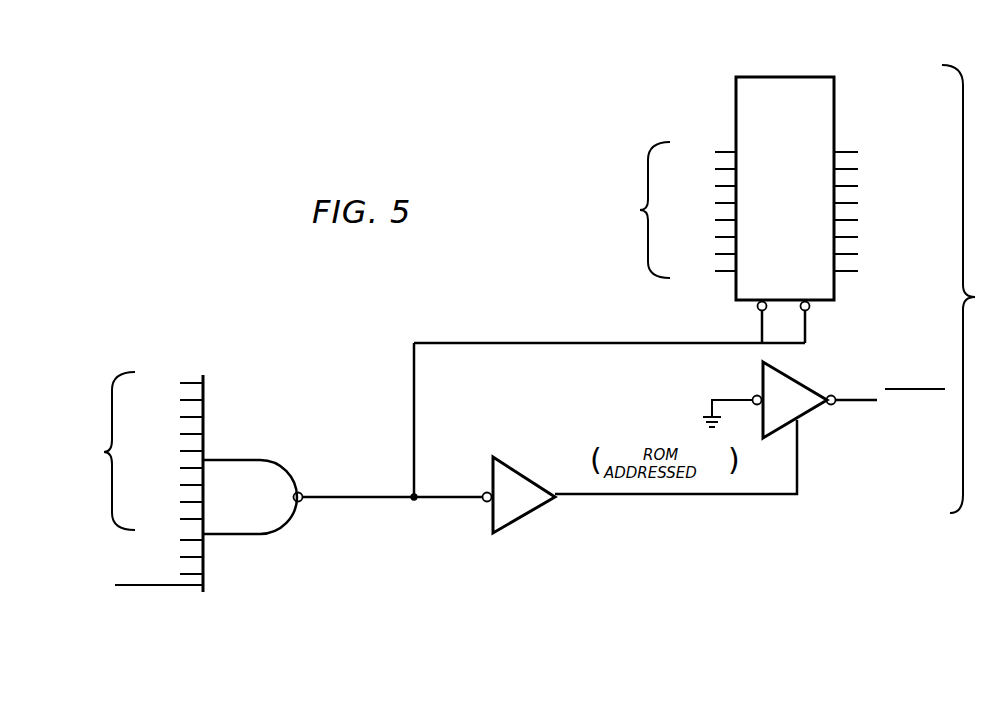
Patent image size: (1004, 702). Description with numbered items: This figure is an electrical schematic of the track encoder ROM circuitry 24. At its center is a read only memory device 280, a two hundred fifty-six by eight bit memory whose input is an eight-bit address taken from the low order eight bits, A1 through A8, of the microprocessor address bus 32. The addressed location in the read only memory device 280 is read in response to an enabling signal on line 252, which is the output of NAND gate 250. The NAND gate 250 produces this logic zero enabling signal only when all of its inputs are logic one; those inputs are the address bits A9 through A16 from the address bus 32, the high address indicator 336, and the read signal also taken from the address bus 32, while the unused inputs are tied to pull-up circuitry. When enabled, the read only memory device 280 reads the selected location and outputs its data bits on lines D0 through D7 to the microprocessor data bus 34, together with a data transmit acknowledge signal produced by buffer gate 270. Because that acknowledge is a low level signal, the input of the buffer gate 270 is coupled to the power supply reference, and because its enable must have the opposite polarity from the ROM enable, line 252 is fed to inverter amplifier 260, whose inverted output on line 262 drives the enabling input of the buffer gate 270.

The read only memory device 280 is at (834, 92).
The microprocessor address bus 32 is at (373, 336).
The microprocessor data bus 34 is at (971, 289).
The NAND gate 250 is at (241, 492).
The enabling signal line 252 is at (447, 500).
The inverter amplifier 260 is at (484, 495).
The inverted enabling signal line 262 is at (705, 496).
The buffer gate 270 is at (824, 400).
The track encoder ROM circuitry 24 is at (598, 560).
The high address indicator 336 is at (165, 586).